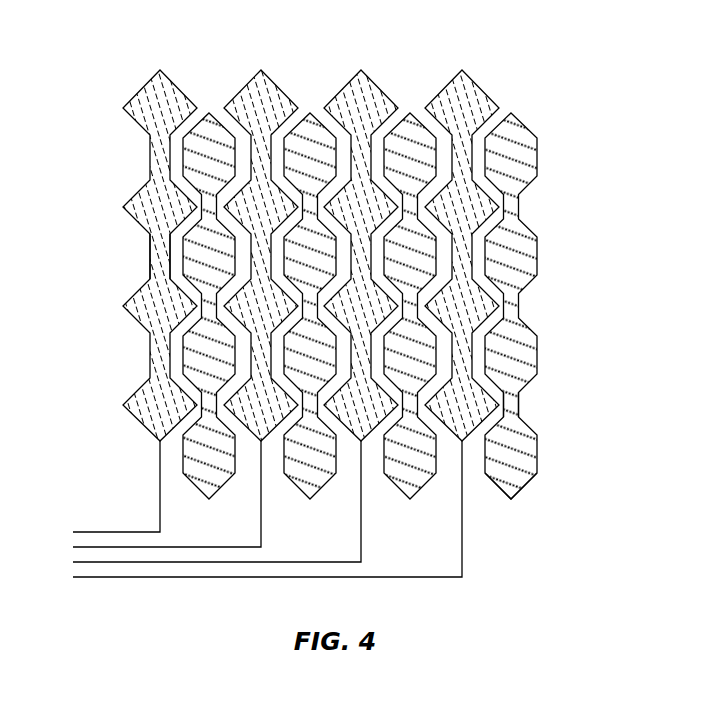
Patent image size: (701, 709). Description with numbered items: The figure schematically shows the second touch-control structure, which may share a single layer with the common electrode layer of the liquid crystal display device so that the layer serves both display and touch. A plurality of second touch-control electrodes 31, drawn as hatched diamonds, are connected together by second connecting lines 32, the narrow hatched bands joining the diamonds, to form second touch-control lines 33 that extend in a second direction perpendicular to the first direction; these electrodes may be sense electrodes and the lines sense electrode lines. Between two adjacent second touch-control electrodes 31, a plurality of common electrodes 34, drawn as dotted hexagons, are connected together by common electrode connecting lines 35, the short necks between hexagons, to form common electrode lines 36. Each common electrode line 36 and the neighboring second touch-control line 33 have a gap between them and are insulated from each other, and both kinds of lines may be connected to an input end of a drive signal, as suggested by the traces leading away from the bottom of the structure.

The second touch-control electrode 31 is at (119, 301).
The second connecting line 32 is at (158, 353).
The second touch-control line 33 is at (462, 70).
The common electrode 34 is at (520, 458).
The common electrode connecting line 35 is at (513, 403).
The common electrode line 36 is at (511, 499).